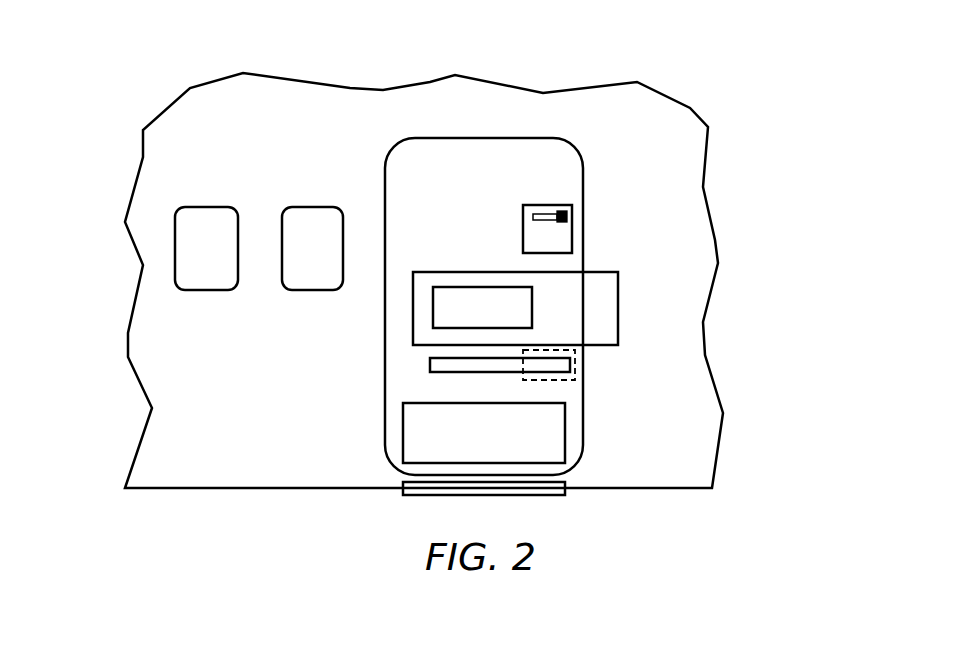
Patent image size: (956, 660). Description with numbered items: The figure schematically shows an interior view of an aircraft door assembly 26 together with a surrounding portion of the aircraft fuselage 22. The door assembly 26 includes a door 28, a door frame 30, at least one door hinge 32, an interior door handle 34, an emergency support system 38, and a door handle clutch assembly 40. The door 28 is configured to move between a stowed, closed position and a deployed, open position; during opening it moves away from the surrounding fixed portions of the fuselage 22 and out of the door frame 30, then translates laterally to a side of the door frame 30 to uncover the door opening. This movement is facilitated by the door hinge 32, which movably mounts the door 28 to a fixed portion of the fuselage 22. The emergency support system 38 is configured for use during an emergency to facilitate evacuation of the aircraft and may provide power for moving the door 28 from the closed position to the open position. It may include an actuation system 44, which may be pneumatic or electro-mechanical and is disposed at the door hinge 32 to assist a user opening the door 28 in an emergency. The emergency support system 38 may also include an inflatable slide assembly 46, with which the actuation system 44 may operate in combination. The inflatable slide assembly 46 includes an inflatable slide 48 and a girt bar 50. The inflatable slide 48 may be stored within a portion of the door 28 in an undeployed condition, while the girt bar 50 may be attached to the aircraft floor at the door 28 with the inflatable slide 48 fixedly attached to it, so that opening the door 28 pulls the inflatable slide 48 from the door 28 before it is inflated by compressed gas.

The fuselage 22 is at (305, 128).
The door assembly 26 is at (607, 115).
The door 28 is at (403, 380).
The door frame 30 is at (485, 138).
The door hinge 32 is at (590, 312).
The interior door handle 34 is at (548, 363).
The emergency support system 38 is at (578, 215).
The door handle clutch assembly 40 is at (577, 368).
The actuation system 44 is at (468, 320).
The inflatable slide assembly 46 is at (573, 432).
The inflatable slide 48 is at (468, 447).
The girt bar 50 is at (527, 487).